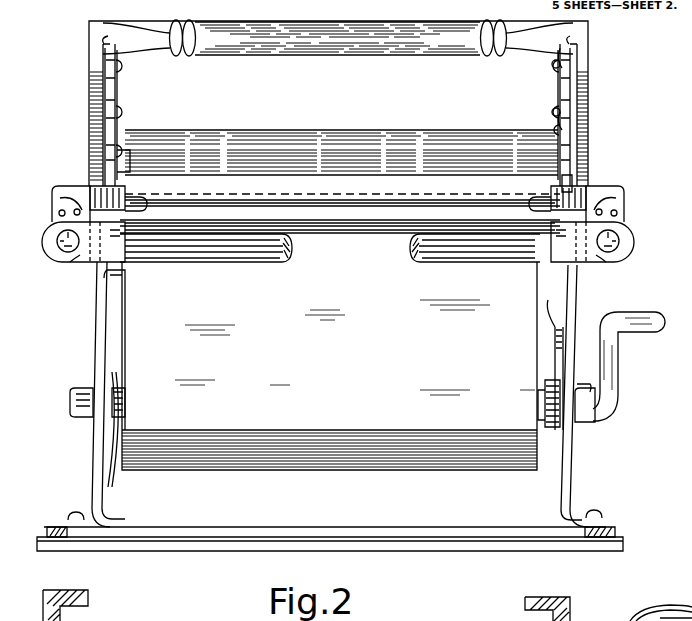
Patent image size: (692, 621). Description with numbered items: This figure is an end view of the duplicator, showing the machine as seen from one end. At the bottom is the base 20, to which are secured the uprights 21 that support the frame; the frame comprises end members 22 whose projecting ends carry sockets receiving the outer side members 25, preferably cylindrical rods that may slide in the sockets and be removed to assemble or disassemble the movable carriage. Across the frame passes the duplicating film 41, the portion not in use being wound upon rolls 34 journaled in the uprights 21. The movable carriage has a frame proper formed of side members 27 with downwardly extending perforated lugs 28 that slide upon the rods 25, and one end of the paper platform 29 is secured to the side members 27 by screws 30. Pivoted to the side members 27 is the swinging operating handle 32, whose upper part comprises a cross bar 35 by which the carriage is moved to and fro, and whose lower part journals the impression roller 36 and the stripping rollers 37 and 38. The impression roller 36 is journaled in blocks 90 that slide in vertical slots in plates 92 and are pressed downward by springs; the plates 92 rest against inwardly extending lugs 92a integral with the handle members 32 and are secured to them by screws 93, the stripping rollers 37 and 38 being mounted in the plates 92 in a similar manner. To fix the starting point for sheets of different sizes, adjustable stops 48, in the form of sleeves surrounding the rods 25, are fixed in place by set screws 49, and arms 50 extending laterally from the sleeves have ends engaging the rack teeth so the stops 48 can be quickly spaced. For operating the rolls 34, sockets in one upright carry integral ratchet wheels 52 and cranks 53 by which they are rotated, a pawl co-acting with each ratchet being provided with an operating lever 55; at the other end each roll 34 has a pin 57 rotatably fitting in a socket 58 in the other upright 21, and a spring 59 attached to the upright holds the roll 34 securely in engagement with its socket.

The base 20 is at (280, 533).
The uprights 21 is at (99, 321).
The end members 22 is at (90, 260).
The outer side members 25 is at (60, 247).
The side members 27 is at (52, 211).
The lugs 28 is at (54, 238).
The platform 29 is at (412, 209).
The screws 30 is at (136, 190).
The operating handle 32 is at (93, 124).
The rolls 34 is at (106, 478).
The cross bar 35 is at (428, 32).
The impression roller 36 is at (342, 195).
The stripping roller 37 is at (124, 162).
The stripping roller 38 is at (378, 143).
The duplicating film 41 is at (329, 366).
The adjustable stops 48 is at (72, 263).
The set screws 49 is at (58, 203).
The arms 50 is at (88, 194).
The ratchet wheels 52 is at (554, 430).
The cranks 53 is at (620, 382).
The operating lever 55 is at (558, 330).
The pin 57 is at (80, 403).
The socket 58 is at (76, 418).
The spring 59 is at (113, 372).
The blocks 90 is at (573, 186).
The plates 92 is at (98, 82).
The lugs 92a is at (570, 62).
The screws 93 is at (122, 105).